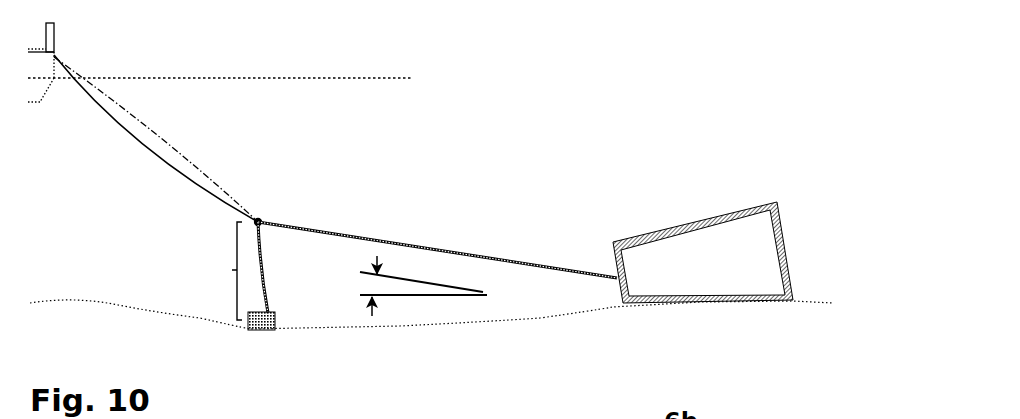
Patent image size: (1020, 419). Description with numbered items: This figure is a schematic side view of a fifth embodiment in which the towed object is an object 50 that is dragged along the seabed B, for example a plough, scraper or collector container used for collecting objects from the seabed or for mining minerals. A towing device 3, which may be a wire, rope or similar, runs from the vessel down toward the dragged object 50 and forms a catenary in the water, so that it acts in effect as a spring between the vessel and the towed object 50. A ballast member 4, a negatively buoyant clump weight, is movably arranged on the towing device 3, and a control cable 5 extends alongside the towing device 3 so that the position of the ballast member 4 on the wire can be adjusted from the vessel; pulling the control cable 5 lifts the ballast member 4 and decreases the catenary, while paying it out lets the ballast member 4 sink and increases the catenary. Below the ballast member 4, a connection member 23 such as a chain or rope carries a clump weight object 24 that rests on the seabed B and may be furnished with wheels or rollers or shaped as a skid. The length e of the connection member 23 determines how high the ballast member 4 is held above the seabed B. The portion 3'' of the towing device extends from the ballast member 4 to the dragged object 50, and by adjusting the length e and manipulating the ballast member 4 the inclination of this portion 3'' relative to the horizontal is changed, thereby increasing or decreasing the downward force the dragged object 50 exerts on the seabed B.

The towing device 3 is at (156, 138).
The control cable 5 is at (201, 155).
The ballast member 4 is at (262, 218).
The portion of the towing device 3'' is at (437, 219).
The connection member 23 is at (268, 278).
The clump weight object 24 is at (278, 328).
The dragged object 50 is at (698, 227).
The seabed B is at (118, 305).
The connection member length e is at (227, 271).